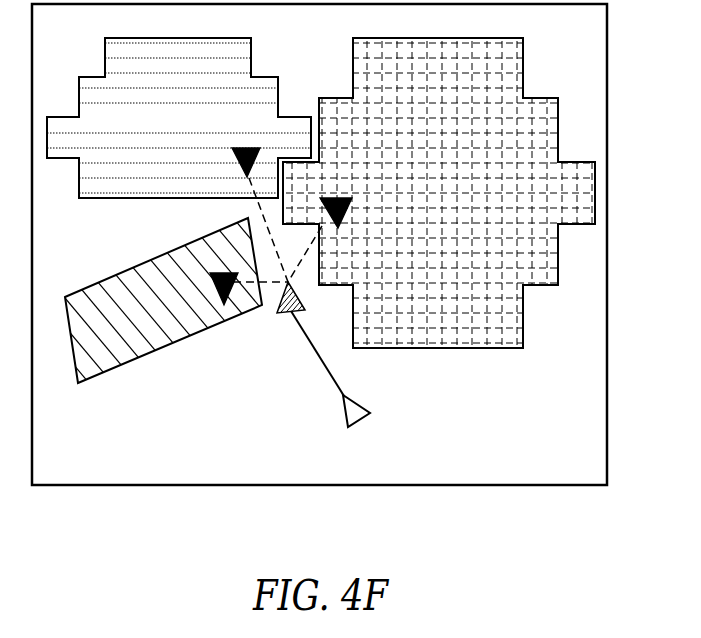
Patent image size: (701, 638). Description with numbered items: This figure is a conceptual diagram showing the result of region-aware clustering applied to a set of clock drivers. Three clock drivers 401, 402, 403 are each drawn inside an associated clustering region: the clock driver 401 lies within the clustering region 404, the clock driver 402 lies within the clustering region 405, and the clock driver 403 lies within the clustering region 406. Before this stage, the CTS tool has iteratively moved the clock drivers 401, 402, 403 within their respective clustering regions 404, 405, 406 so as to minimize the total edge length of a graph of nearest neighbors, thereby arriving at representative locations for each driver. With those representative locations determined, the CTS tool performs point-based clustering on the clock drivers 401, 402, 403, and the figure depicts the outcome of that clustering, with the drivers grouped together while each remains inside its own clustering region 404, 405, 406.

The clock driver 401 is at (247, 148).
The clock driver 402 is at (335, 197).
The clock driver 403 is at (228, 292).
The clustering region 404 is at (105, 199).
The clustering region 405 is at (458, 349).
The clustering region 406 is at (143, 356).